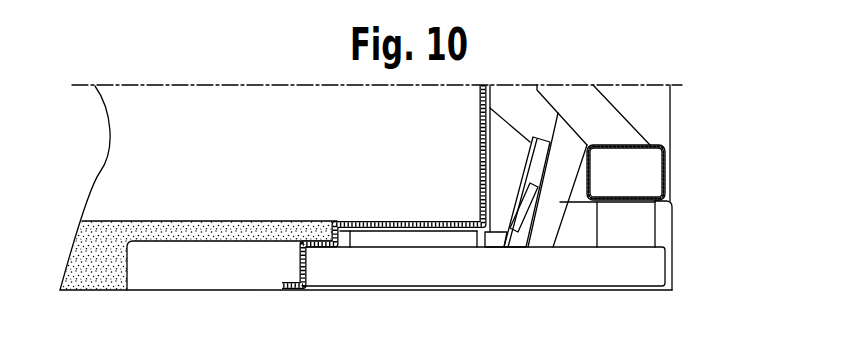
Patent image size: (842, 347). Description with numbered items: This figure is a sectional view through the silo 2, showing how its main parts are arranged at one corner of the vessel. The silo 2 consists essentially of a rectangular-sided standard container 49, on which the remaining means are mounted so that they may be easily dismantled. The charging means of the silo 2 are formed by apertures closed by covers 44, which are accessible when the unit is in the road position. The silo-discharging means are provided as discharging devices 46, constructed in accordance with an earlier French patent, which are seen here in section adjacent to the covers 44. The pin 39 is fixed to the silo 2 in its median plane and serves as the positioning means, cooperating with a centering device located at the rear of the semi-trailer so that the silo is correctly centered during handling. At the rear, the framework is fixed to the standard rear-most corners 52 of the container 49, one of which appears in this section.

The silo 2 is at (128, 203).
The standard container 49 is at (297, 192).
The covers 44 is at (527, 198).
The discharging devices 46 is at (555, 165).
The rear-most corners 52 is at (667, 226).
The pin 39 is at (645, 267).